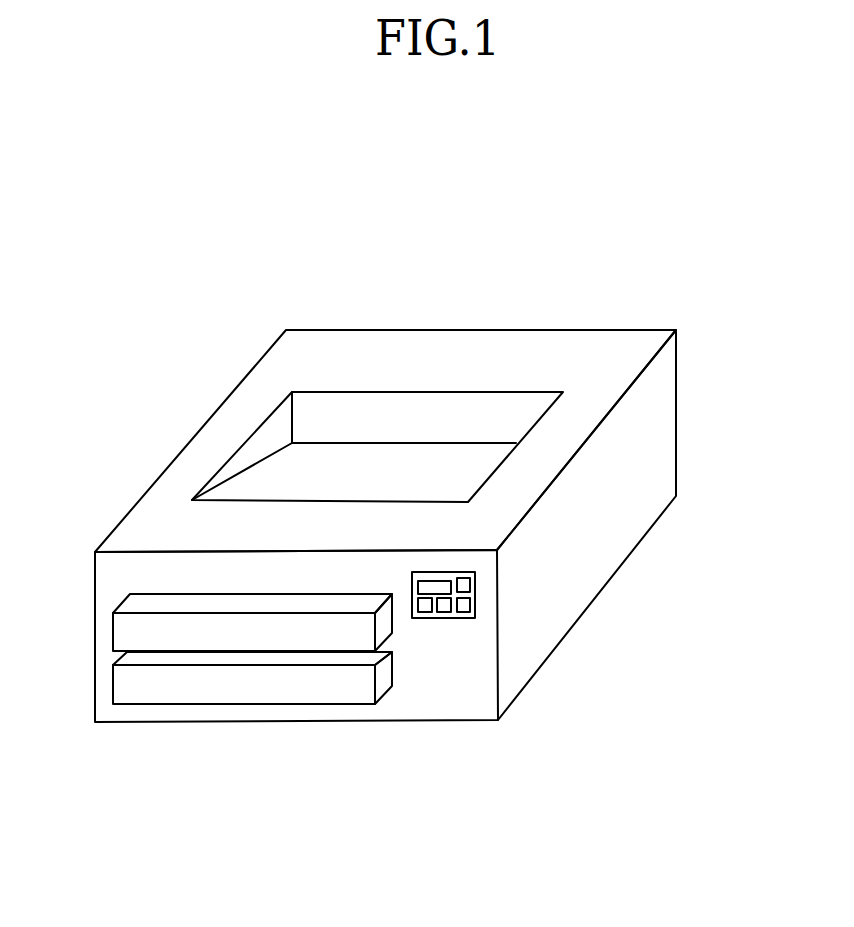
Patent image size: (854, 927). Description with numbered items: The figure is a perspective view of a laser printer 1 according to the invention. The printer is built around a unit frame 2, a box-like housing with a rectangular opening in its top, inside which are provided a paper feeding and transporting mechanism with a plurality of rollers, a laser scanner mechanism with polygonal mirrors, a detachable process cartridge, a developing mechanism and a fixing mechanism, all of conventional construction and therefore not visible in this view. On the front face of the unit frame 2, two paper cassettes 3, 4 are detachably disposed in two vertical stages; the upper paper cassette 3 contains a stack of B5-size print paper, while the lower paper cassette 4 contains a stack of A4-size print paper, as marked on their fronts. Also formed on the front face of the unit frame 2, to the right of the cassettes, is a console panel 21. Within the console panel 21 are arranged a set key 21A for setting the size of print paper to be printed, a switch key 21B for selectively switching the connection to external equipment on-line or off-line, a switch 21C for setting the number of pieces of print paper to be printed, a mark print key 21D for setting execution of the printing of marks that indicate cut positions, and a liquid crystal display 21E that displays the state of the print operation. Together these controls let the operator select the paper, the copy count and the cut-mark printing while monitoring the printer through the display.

The laser printer 1 is at (188, 383).
The unit frame 2 is at (458, 326).
The paper cassette 3 is at (113, 633).
The paper cassette 4 is at (113, 688).
The console panel 21 is at (472, 603).
The set key 21A is at (445, 612).
The switch key 21B is at (425, 612).
The switch 21C is at (465, 612).
The mark print key 21D is at (470, 585).
The liquid crystal display 21E is at (440, 581).